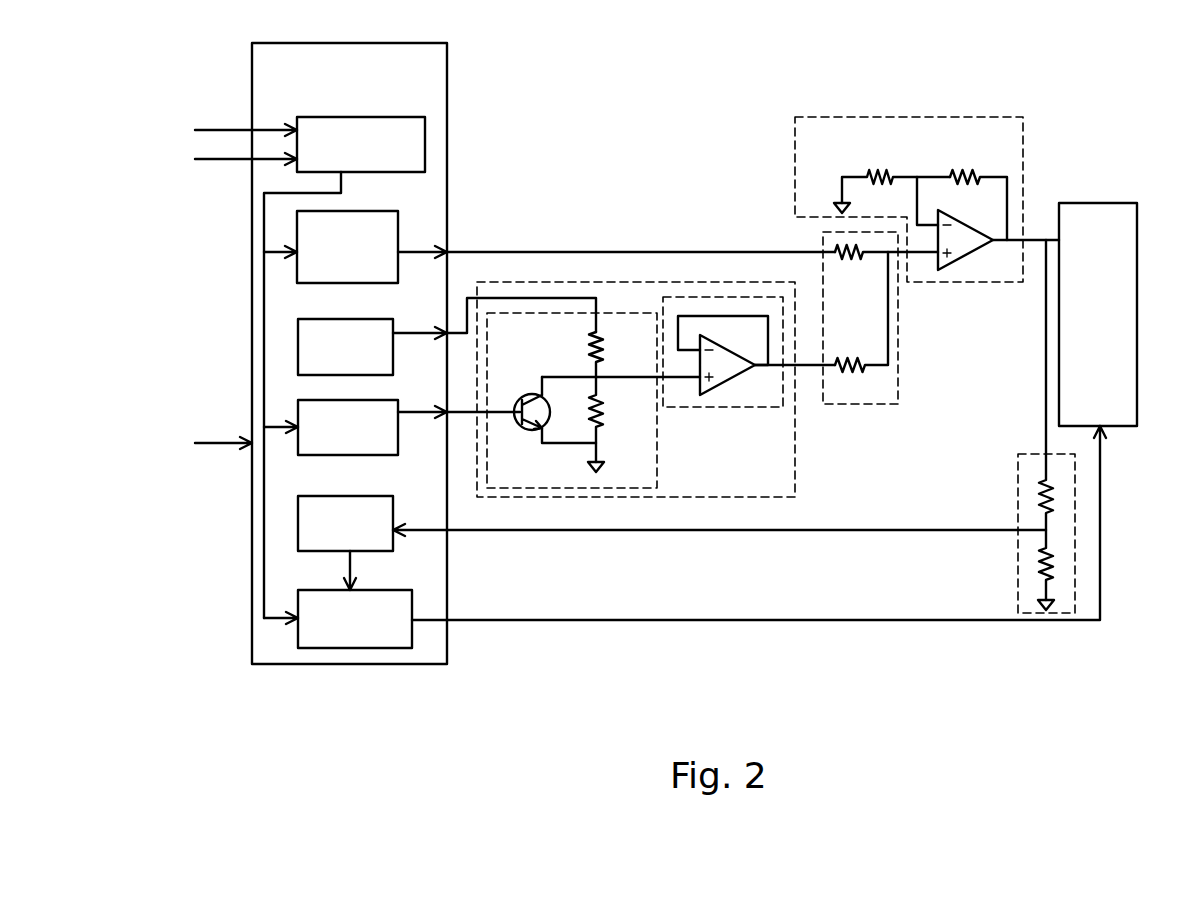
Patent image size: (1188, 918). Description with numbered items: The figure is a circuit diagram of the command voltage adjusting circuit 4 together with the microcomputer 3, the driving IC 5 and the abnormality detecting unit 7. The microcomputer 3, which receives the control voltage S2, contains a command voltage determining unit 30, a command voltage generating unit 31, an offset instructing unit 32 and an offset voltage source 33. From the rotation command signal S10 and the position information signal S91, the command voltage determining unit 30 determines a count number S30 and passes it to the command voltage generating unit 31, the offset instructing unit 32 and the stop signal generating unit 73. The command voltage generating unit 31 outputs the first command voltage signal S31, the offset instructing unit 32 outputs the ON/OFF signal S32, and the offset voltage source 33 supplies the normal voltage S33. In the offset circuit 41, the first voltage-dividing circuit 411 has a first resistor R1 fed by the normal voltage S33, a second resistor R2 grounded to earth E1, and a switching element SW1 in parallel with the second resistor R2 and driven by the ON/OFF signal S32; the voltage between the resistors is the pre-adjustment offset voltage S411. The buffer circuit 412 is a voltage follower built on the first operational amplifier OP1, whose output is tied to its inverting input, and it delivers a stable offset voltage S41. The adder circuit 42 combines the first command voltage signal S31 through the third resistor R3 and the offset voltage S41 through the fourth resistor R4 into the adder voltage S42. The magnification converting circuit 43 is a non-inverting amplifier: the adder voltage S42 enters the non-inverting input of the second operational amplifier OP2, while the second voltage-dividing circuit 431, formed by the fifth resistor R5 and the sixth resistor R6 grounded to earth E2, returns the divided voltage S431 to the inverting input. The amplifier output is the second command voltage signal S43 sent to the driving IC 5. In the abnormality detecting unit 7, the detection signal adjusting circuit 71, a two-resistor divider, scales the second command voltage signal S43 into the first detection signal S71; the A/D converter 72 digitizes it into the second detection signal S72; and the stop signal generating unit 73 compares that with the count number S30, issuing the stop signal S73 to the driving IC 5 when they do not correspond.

The microcomputer 3 is at (447, 58).
The command voltage adjusting circuit 4 is at (661, 108).
The driving IC 5 is at (1112, 203).
The abnormality detecting unit 7 is at (665, 638).
The command voltage determining unit 30 is at (360, 117).
The command voltage generating unit 31 is at (365, 211).
The offset instructing unit 32 is at (360, 455).
The offset voltage source 33 is at (360, 319).
The offset circuit 41 is at (795, 472).
The first voltage-dividing circuit 411 is at (598, 420).
The buffer circuit 412 is at (723, 382).
The adder circuit 42 is at (880, 348).
The magnification converting circuit 43 is at (998, 118).
The second voltage-dividing circuit 431 is at (908, 154).
The detection signal adjusting circuit 71 is at (1024, 443).
The A/D converter 72 is at (325, 494).
The stop signal generating unit 73 is at (325, 590).
The control voltage S2 is at (214, 441).
The rotation command signal S10 is at (230, 128).
The position information signal S91 is at (230, 162).
The count number S30 is at (264, 229).
The first command voltage signal S31 is at (404, 251).
The ON/OFF signal S32 is at (404, 412).
The normal voltage S33 is at (405, 333).
The offset voltage S41 is at (800, 367).
The pre-adjustment offset voltage S411 is at (633, 378).
The adder voltage S42 is at (914, 255).
The second command voltage signal S43 is at (1038, 236).
The divided voltage S431 is at (927, 196).
The first detection signal S71 is at (900, 534).
The second detection signal S72 is at (355, 568).
The stop signal S73 is at (600, 608).
The first resistor R1 is at (608, 354).
The second resistor R2 is at (608, 419).
The third resistor R3 is at (886, 263).
The fourth resistor R4 is at (861, 323).
The fifth resistor R5 is at (978, 193).
The sixth resistor R6 is at (896, 175).
The first operational amplifier OP1 is at (723, 355).
The second operational amplifier OP2 is at (967, 240).
The switching element SW1 is at (546, 408).
The earth E1 is at (608, 471).
The earth E2 is at (830, 204).